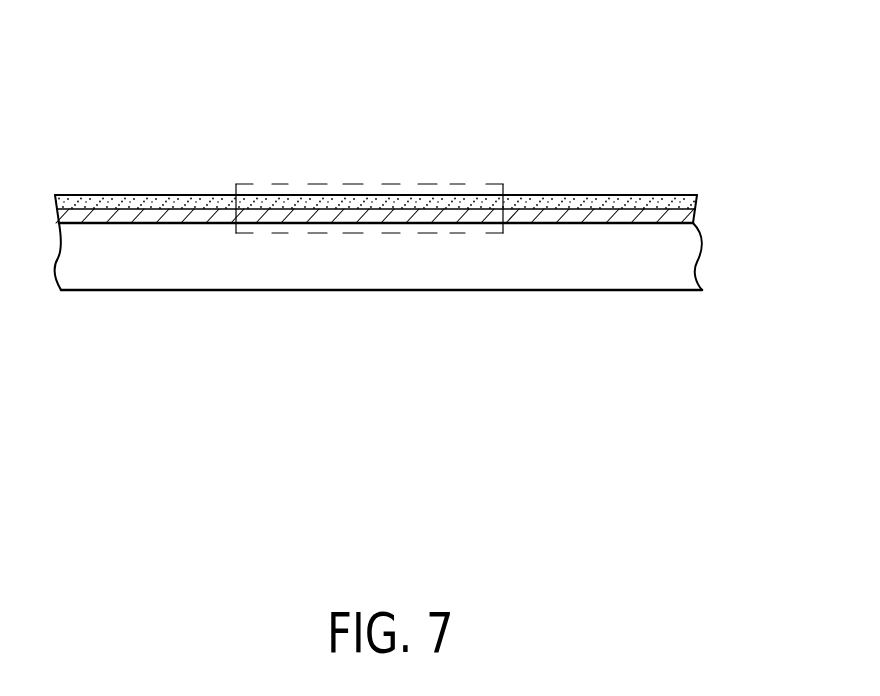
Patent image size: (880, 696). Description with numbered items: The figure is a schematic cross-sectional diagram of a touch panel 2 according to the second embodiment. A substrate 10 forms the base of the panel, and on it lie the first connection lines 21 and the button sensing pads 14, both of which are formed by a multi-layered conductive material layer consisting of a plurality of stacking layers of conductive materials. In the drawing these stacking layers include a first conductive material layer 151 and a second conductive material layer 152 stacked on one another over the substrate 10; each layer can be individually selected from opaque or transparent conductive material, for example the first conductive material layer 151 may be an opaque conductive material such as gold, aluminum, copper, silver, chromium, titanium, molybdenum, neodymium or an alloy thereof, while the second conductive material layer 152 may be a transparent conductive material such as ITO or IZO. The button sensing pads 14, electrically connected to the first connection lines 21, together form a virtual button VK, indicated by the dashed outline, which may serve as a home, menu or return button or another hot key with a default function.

The touch panel 2 is at (675, 75).
The substrate 10 is at (365, 278).
The button sensing pad 14 is at (410, 132).
The first connection line 21 is at (198, 132).
The first conductive material layer 151 is at (167, 218).
The second conductive material layer 152 is at (73, 203).
The virtual button VK is at (493, 183).